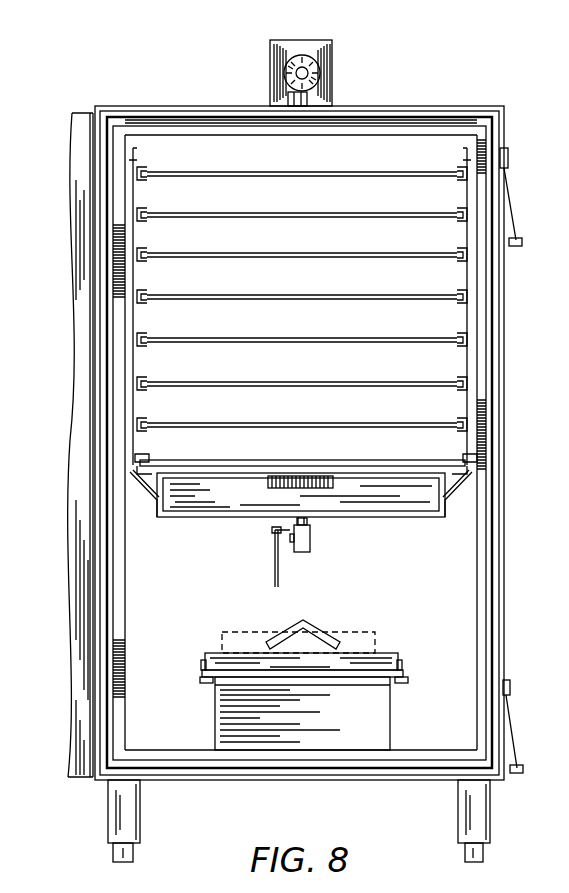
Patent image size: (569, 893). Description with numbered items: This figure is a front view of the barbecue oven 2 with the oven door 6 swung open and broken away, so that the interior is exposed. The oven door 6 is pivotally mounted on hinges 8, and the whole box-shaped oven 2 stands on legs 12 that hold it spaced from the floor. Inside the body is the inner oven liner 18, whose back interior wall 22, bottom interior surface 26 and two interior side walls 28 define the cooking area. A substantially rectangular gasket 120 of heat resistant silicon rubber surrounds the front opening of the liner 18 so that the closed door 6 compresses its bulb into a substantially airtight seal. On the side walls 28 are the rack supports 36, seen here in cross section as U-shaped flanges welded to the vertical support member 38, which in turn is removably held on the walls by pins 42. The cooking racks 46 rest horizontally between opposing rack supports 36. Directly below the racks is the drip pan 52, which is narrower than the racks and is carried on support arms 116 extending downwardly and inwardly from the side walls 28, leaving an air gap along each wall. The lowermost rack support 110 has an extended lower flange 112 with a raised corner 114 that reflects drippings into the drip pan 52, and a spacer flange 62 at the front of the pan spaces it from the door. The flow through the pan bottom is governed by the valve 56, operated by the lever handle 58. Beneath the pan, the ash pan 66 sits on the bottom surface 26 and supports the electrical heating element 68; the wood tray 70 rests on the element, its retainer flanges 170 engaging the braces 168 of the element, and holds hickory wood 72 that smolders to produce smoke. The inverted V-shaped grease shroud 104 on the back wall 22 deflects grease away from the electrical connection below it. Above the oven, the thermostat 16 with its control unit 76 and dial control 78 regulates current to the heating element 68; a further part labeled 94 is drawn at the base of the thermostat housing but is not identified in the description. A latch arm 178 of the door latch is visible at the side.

The barbecue oven 2 is at (146, 76).
The oven door 6 is at (76, 113).
The hinges 8 is at (92, 220).
The legs 12 is at (108, 802).
The thermostat 16 is at (340, 51).
The inner oven liner 18 is at (458, 545).
The back interior wall 22 is at (398, 584).
The bottom interior surface 26 is at (432, 745).
The interior side walls 28 is at (133, 573).
The rack supports 36 is at (146, 218).
The vertical support member 38 is at (130, 194).
The pins 42 is at (138, 160).
The cooking racks 46 is at (348, 218).
The drip pan 52 is at (224, 524).
The valve 56 is at (318, 546).
The lever handle 58 is at (275, 568).
The spacer flange 62 is at (268, 482).
The ash pan 66 is at (404, 714).
The electrical heating element 68 is at (268, 682).
The wood tray 70 is at (398, 646).
The hickory wood 72 is at (226, 634).
The control unit 76 is at (270, 55).
The dial control 78 is at (320, 73).
The fan shaft 94 is at (272, 100).
The grease shroud 104 is at (292, 628).
The lowermost rack support 110 is at (137, 462).
The extended lower flange 112 is at (142, 470).
The raised corner 114 is at (166, 460).
The support arm 116 is at (150, 492).
The gasket 120 is at (214, 120).
The braces 168 is at (206, 686).
The retainer flanges 170 is at (204, 668).
The latch arm 178 is at (516, 240).